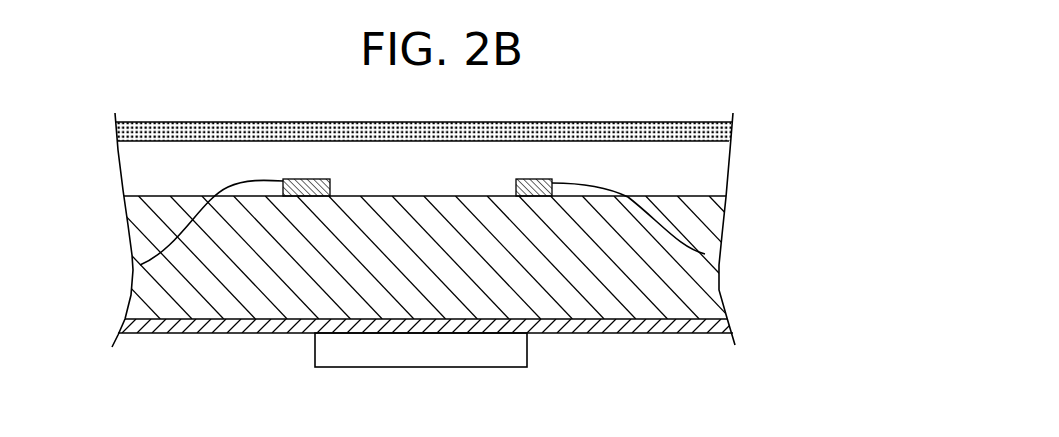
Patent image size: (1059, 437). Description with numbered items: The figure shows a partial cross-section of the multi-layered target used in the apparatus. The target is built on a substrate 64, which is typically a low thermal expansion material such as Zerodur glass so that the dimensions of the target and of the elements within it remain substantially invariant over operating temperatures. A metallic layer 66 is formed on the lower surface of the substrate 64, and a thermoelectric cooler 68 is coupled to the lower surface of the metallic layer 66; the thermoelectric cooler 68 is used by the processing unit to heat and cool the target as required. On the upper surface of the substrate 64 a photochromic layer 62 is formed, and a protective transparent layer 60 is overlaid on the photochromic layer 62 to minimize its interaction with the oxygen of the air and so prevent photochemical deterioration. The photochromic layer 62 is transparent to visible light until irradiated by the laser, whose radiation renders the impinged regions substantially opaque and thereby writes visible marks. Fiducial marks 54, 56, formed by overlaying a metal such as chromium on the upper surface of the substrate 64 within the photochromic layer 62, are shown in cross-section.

The fiducial mark 54 is at (705, 254).
The fiducial mark 56 is at (140, 265).
The protective transparent layer 60 is at (731, 131).
The photochromic layer 62 is at (720, 165).
The substrate 64 is at (140, 212).
The metallic layer 66 is at (717, 327).
The thermoelectric cooler 68 is at (357, 367).